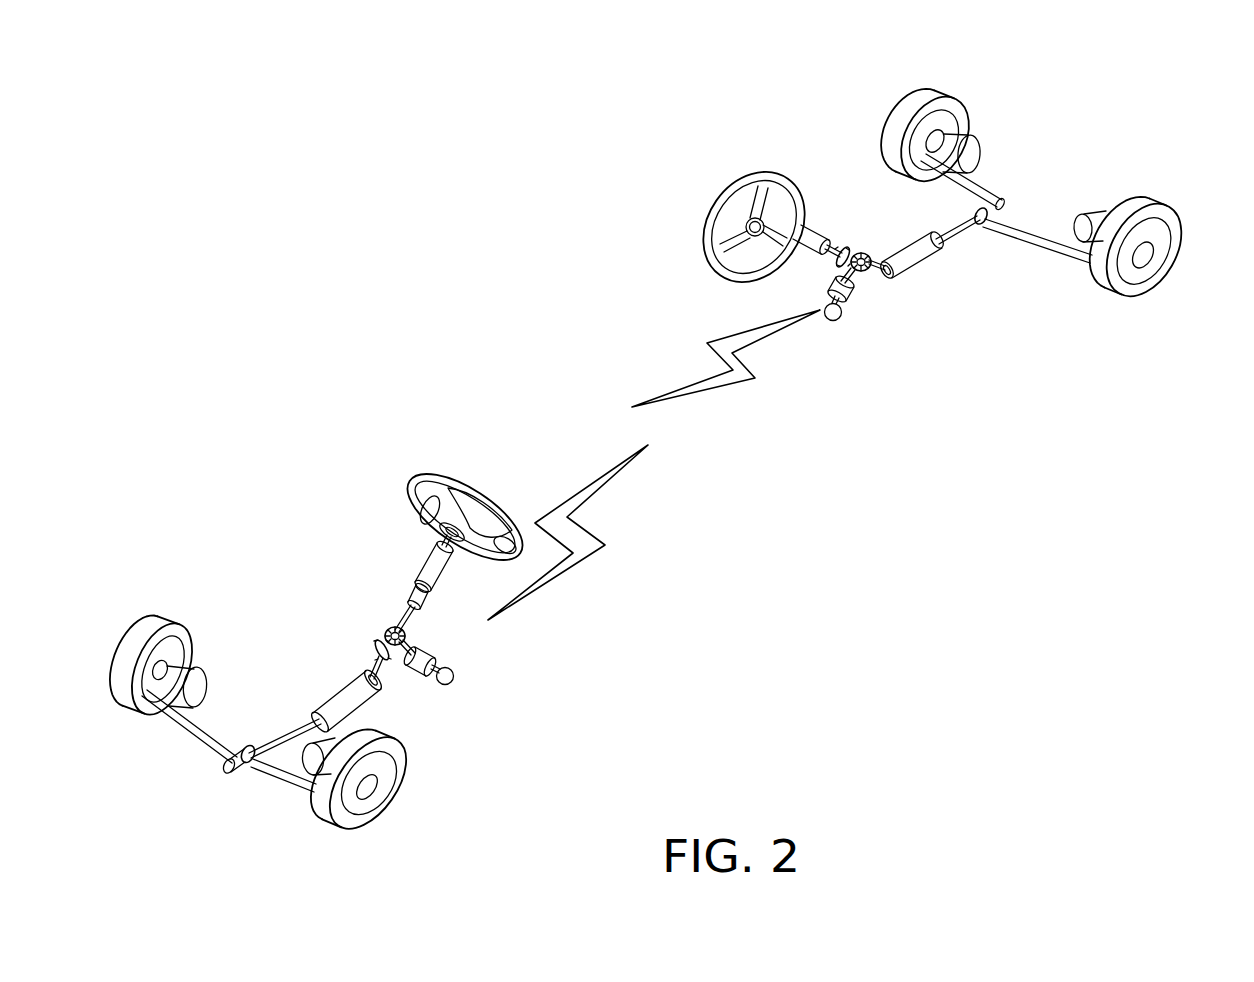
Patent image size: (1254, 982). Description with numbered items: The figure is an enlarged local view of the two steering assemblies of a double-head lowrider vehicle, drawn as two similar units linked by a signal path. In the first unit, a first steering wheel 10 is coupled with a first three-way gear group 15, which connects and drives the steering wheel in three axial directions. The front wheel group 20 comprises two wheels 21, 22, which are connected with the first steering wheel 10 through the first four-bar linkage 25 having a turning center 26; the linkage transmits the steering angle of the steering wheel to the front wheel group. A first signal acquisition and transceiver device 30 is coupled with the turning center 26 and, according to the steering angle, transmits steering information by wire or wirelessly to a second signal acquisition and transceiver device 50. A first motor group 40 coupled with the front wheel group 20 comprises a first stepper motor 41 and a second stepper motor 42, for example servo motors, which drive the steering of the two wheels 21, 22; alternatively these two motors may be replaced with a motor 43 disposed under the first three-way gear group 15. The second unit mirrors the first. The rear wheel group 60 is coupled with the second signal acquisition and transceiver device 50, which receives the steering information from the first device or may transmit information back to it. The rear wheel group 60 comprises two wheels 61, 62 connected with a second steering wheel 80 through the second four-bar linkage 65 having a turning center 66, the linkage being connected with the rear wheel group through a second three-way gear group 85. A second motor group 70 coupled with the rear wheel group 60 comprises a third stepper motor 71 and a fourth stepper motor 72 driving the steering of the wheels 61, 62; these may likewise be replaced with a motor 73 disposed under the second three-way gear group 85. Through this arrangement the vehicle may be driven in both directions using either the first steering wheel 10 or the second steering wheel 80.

The first steering wheel 10 is at (728, 197).
The first three-way gear group 15 is at (863, 250).
The front wheel group 20 is at (965, 86).
The wheel 21 is at (902, 115).
The wheel 22 is at (1158, 259).
The first four-bar linkage 25 is at (840, 248).
The turning center 26 is at (984, 228).
The first signal acquisition and transceiver device 30 is at (918, 262).
The first motor group 40 is at (987, 138).
The first stepper motor 41 is at (966, 140).
The second stepper motor 42 is at (1100, 213).
The motor 43 is at (850, 290).
The second signal acquisition and transceiver device 50 is at (347, 693).
The rear wheel group 60 is at (300, 825).
The wheel 61 is at (137, 638).
The wheel 62 is at (327, 812).
The second four-bar linkage 65 is at (394, 628).
The turning center 66 is at (243, 752).
The second motor group 70 is at (210, 667).
The third stepper motor 71 is at (188, 673).
The fourth stepper motor 72 is at (318, 740).
The motor 73 is at (440, 650).
The second steering wheel 80 is at (473, 478).
The second three-way gear group 85 is at (378, 640).